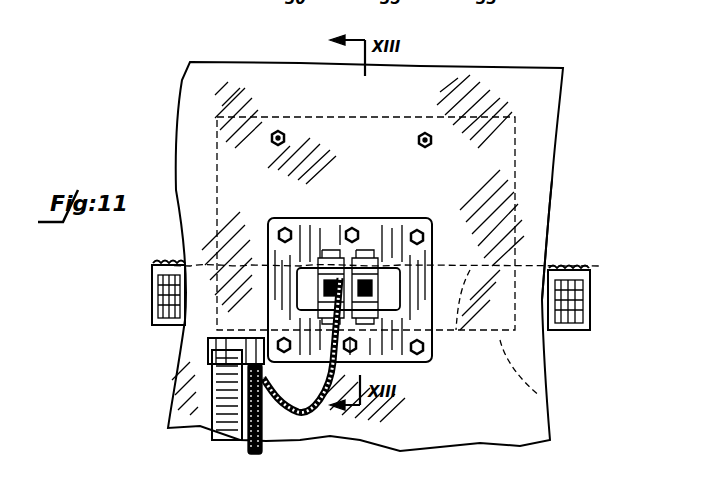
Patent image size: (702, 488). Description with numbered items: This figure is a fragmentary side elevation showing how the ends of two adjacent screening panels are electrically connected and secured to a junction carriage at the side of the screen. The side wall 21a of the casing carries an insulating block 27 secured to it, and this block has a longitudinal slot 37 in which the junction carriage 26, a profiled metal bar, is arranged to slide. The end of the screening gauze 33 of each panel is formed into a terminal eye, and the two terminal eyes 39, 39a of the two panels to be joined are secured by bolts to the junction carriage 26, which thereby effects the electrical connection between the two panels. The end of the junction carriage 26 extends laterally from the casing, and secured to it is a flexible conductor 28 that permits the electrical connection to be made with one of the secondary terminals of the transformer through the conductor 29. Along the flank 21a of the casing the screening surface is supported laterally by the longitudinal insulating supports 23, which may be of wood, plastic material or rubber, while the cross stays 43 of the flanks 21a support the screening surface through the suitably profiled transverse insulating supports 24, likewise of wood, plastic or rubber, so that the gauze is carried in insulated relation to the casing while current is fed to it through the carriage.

The side wall of the casing 21a is at (412, 88).
The longitudinal insulating support 23 is at (571, 322).
The transverse insulating support 24 is at (556, 225).
The junction carriage 26 is at (362, 303).
The insulating block 27 is at (312, 218).
The flexible conductor 28 is at (302, 415).
The conductor 29 is at (252, 450).
The screening gauze 33 is at (566, 268).
The longitudinal slot 37 is at (300, 296).
The terminal eye 39 is at (296, 218).
The terminal eye 39a is at (398, 226).
The cross stay 43 is at (541, 397).